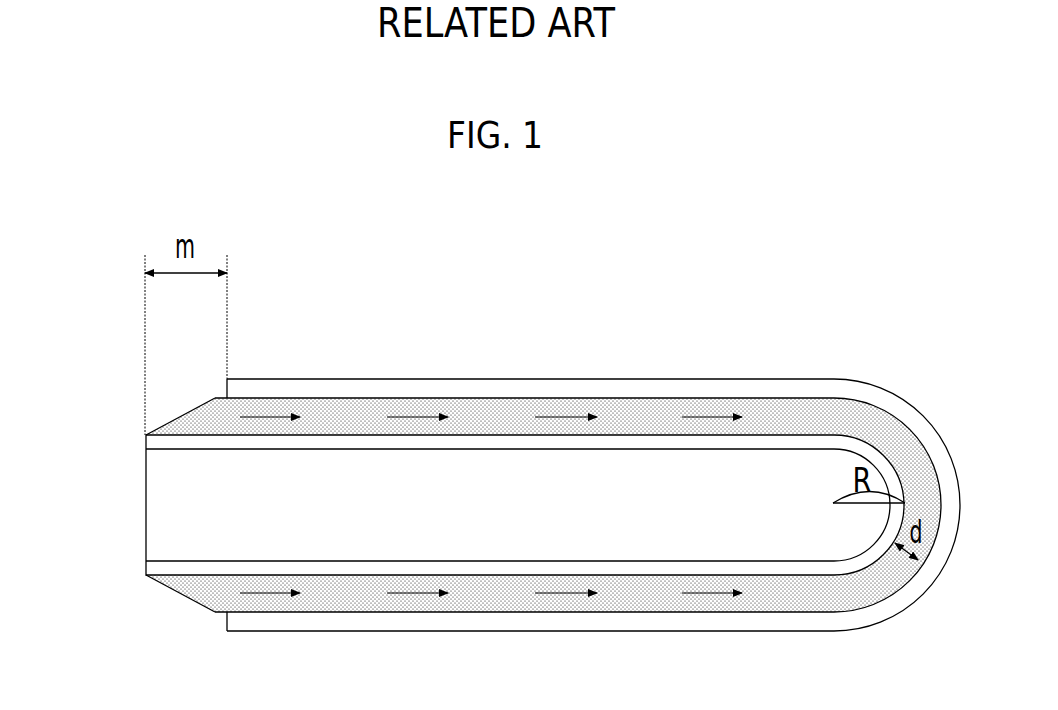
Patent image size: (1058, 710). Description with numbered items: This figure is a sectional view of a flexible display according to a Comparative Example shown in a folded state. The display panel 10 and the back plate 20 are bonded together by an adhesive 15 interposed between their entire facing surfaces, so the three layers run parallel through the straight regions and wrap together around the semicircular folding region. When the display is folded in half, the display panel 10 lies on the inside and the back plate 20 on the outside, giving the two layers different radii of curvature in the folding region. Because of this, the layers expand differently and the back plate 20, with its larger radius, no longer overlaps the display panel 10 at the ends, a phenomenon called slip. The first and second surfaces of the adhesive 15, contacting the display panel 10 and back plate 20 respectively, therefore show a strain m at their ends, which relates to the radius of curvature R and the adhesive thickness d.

The display panel 10 is at (146, 435).
The adhesive 15 is at (180, 412).
The back plate 20 is at (346, 378).